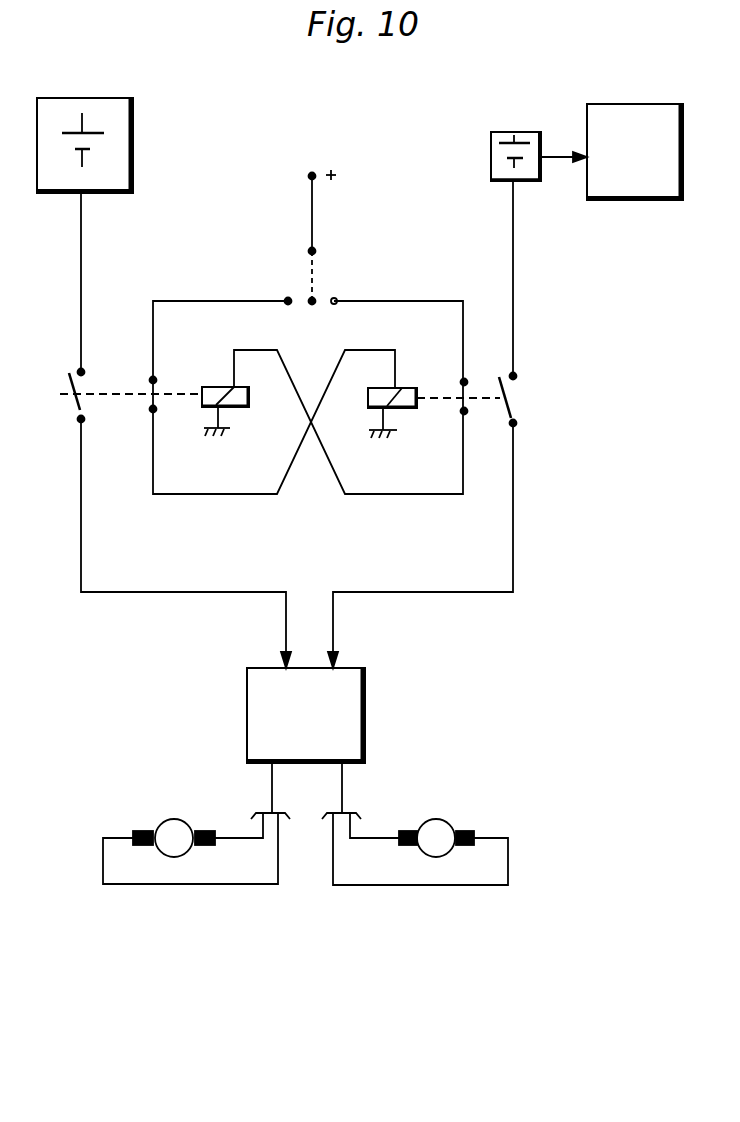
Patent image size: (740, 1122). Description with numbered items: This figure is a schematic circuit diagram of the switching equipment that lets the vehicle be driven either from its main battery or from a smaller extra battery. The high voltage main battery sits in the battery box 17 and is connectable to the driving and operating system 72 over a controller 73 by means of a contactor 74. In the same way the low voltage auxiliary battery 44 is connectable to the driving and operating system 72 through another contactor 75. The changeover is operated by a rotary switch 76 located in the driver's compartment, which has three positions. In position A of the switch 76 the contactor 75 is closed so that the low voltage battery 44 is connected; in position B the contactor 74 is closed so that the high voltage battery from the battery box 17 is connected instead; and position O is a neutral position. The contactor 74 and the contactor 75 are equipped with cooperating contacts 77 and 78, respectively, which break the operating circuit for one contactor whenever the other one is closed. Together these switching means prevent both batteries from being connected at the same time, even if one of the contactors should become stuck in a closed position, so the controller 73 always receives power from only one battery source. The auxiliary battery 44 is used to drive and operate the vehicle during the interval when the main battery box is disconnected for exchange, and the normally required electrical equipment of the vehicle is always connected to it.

The battery box 17 is at (133, 130).
The auxiliary battery 44 is at (491, 145).
The cooperating contact 77 is at (635, 188).
The rotary switch 76 is at (312, 273).
The contactor 74 is at (73, 404).
The contactor 75 is at (518, 415).
The cooperating contact 78 is at (470, 412).
The controller 73 is at (365, 697).
The driving and operating system 72 is at (384, 809).